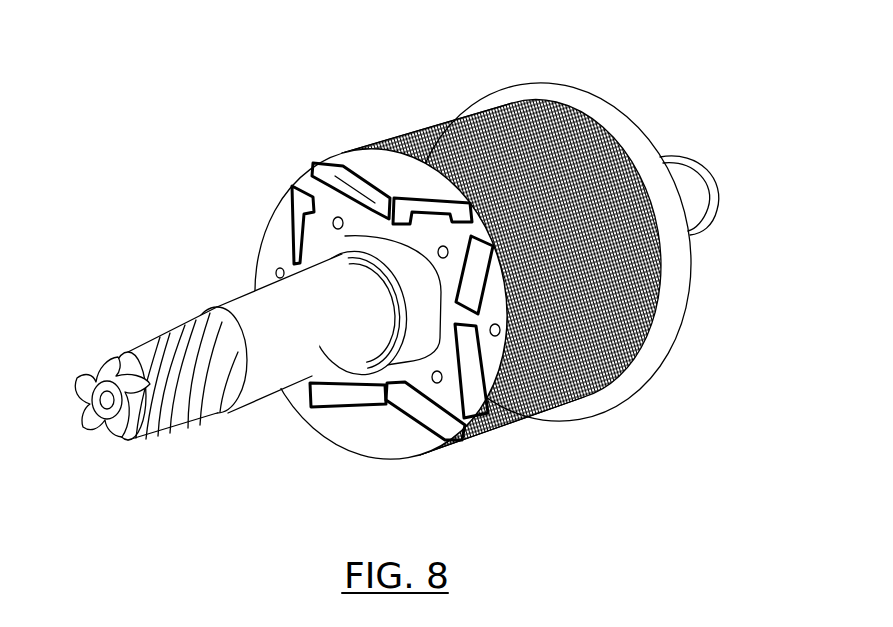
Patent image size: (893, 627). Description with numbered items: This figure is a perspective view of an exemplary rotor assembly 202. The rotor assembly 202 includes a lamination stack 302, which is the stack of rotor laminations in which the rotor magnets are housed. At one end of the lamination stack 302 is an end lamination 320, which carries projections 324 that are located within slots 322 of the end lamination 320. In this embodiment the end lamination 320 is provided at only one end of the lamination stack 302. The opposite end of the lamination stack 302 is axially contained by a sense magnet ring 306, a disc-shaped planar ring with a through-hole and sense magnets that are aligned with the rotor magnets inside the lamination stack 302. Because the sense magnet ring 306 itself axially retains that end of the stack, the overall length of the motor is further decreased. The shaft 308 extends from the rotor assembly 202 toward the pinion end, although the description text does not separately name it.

The rotor assembly 202 is at (230, 59).
The lamination stack 302 is at (587, 393).
The sense magnet ring 306 is at (677, 300).
The shaft with pinion gear 308 is at (247, 302).
The end lamination 320 is at (492, 360).
The slots 322 is at (363, 183).
The projections 324 is at (352, 192).